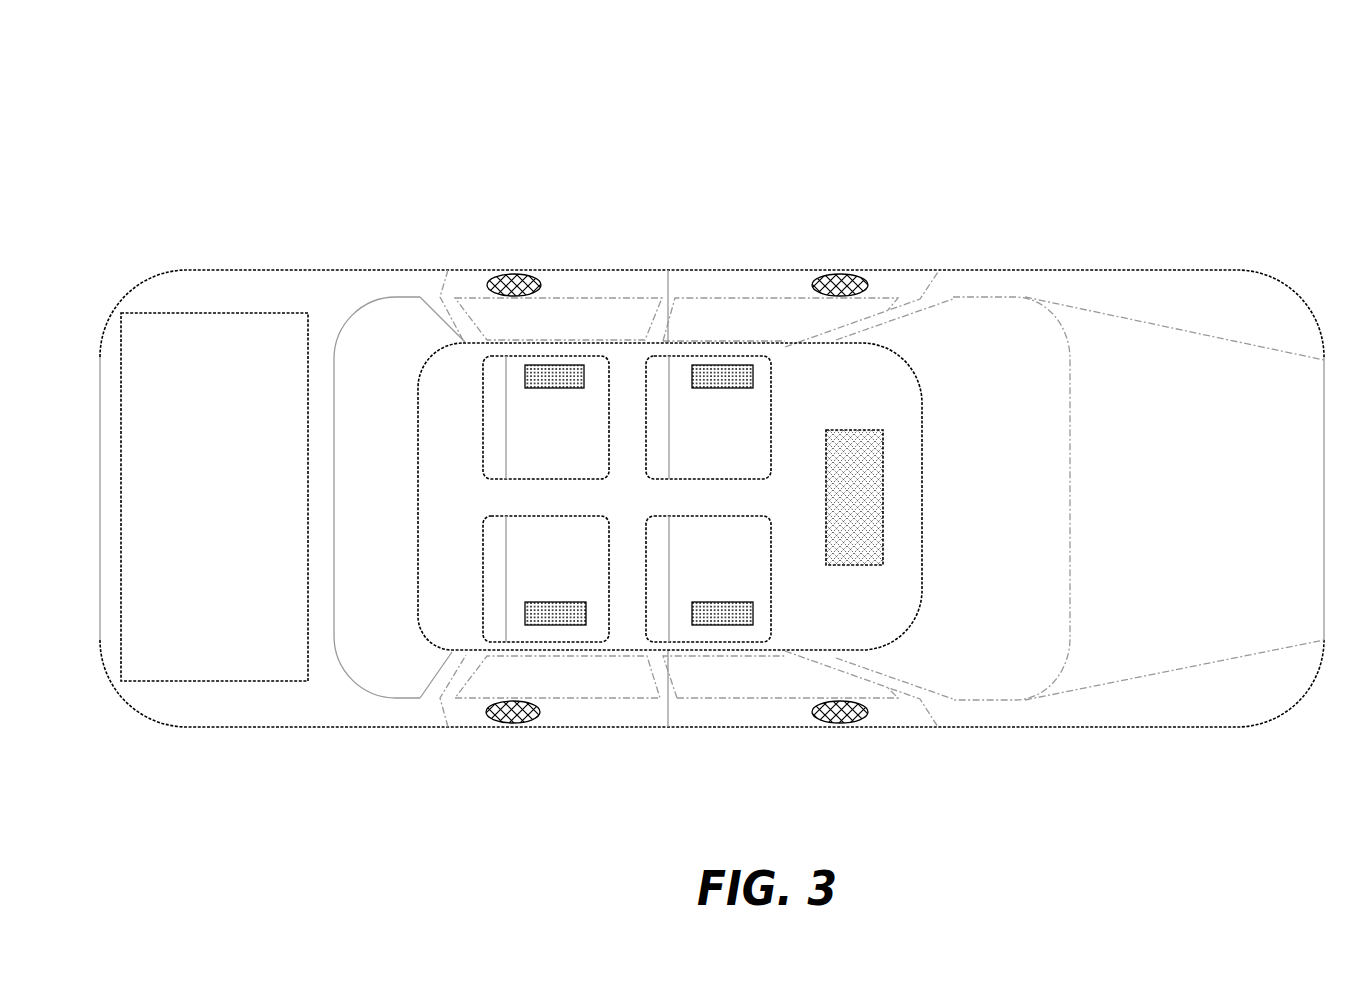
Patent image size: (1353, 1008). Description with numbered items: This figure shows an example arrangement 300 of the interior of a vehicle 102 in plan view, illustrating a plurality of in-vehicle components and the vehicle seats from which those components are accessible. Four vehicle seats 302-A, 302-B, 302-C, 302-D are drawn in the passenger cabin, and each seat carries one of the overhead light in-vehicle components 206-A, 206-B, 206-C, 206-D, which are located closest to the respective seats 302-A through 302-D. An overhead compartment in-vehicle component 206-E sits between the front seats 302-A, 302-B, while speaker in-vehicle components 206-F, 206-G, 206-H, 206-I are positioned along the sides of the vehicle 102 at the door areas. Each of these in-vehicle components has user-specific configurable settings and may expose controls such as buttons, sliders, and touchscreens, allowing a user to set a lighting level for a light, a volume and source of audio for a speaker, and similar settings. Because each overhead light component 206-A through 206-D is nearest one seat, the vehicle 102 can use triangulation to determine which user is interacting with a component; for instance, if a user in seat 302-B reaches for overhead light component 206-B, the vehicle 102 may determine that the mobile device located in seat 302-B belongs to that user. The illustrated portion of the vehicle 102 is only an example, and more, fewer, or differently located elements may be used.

The vehicle sensor arrangement 300 is at (174, 42).
The vehicle 102 is at (236, 270).
The overhead light in-vehicle component 206-A is at (753, 375).
The overhead light in-vehicle component 206-B is at (753, 612).
The overhead light in-vehicle component 206-C is at (525, 612).
The overhead light in-vehicle component 206-D is at (525, 375).
The overhead compartment in-vehicle component 206-E is at (826, 483).
The speaker in-vehicle component 206-F is at (840, 276).
The speaker in-vehicle component 206-G is at (838, 722).
The speaker in-vehicle component 206-H is at (512, 722).
The speaker in-vehicle component 206-I is at (514, 276).
The vehicle seat 302-A is at (772, 430).
The vehicle seat 302-B is at (772, 565).
The vehicle seat 302-C is at (483, 545).
The vehicle seat 302-D is at (483, 447).